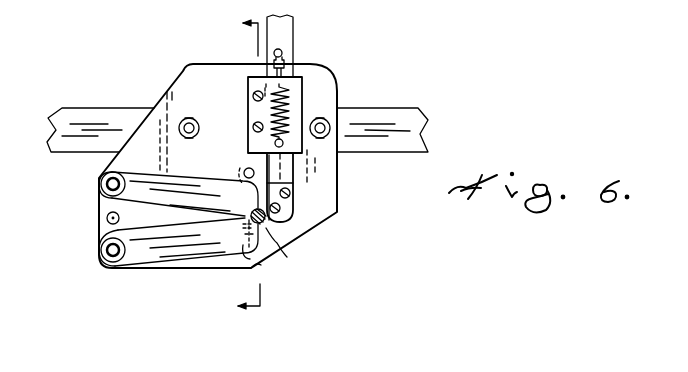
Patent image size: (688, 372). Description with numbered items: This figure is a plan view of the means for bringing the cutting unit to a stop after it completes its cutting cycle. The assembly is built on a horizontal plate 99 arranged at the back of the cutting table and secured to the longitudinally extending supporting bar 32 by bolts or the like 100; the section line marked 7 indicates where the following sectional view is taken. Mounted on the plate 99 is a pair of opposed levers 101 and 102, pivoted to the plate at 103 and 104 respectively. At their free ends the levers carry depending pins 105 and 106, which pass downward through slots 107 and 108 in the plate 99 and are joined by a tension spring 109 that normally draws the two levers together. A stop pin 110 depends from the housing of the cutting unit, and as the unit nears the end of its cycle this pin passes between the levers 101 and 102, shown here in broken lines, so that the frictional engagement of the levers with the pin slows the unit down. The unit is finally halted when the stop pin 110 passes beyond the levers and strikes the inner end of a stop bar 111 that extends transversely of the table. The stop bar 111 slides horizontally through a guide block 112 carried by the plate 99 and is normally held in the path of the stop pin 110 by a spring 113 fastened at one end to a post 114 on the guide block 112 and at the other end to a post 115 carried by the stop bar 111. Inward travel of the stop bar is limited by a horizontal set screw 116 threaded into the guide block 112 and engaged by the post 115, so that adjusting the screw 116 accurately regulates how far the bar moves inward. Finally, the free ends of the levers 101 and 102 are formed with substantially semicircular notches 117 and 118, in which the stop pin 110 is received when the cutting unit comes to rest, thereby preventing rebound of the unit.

The section line 7- 7 is at (252, 165).
The longitudinally extending supporting bar 32 is at (399, 116).
The horizontal plate 99 is at (326, 190).
The bolts 100 is at (196, 120).
The lever 101 is at (206, 181).
The lever 102 is at (129, 265).
The pivot 103 is at (100, 184).
The pivot 104 is at (100, 250).
The depending pin 105 is at (246, 170).
The depending pin 106 is at (270, 264).
The slot 107 is at (248, 148).
The slot 108 is at (259, 264).
The tension spring 109 is at (279, 247).
The stop pin 110 is at (106, 218).
The stop bar 111 is at (287, 173).
The guide block 112 is at (293, 90).
The spring 113 is at (262, 107).
The post 114 is at (325, 136).
The post 115 is at (282, 52).
The set screw 116 is at (287, 64).
The semicircular notch 117 is at (247, 207).
The semicircular notch 118 is at (244, 227).